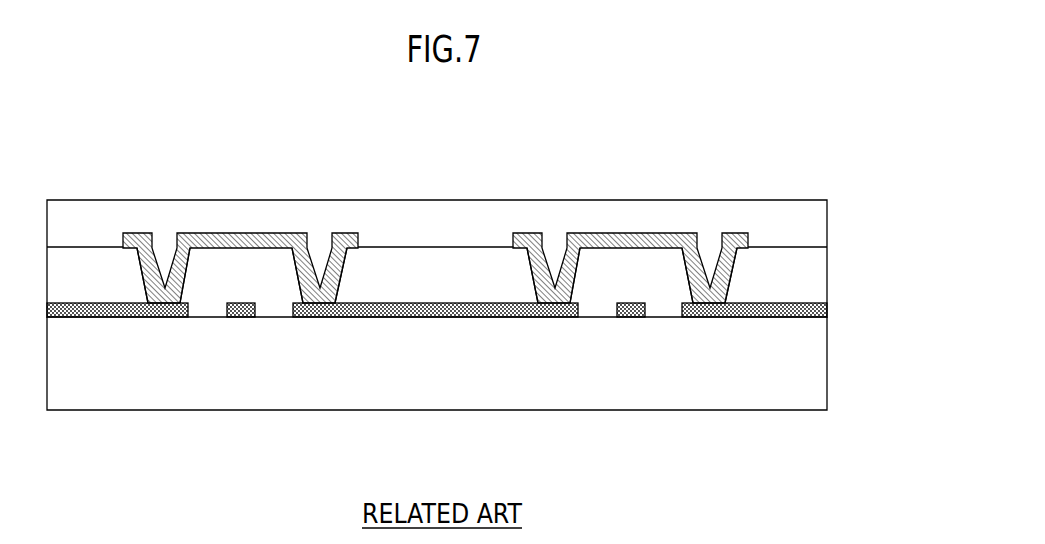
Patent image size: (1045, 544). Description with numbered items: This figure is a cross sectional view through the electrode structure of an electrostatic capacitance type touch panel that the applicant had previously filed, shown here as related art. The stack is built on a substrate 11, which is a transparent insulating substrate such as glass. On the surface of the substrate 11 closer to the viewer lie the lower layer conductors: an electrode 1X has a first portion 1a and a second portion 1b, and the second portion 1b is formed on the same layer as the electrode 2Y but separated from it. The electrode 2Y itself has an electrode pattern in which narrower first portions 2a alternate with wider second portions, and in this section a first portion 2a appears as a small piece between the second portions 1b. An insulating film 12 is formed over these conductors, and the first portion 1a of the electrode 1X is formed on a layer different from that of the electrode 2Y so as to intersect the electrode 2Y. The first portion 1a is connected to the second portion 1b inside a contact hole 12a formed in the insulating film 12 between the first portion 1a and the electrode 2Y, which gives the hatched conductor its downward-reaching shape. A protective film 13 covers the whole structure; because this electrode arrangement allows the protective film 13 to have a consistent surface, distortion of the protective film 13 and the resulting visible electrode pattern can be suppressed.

The substrate 11 is at (708, 398).
The electrode 1X is at (773, 304).
The insulating film 12 is at (812, 270).
The protective film 13 is at (813, 222).
The second portion 1b is at (122, 317).
The electrode 2Y is at (399, 383).
The first portion 2a is at (236, 318).
The first portion 1a is at (215, 235).
The contact hole 12a is at (165, 237).